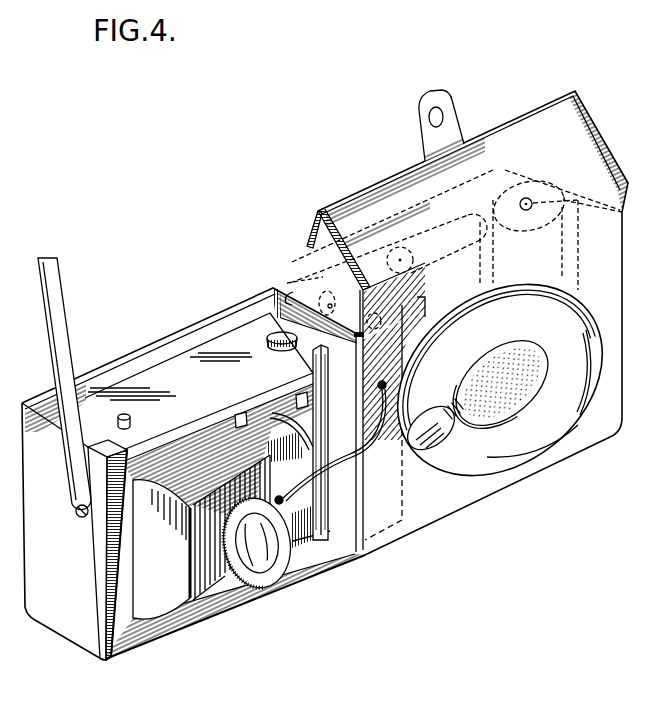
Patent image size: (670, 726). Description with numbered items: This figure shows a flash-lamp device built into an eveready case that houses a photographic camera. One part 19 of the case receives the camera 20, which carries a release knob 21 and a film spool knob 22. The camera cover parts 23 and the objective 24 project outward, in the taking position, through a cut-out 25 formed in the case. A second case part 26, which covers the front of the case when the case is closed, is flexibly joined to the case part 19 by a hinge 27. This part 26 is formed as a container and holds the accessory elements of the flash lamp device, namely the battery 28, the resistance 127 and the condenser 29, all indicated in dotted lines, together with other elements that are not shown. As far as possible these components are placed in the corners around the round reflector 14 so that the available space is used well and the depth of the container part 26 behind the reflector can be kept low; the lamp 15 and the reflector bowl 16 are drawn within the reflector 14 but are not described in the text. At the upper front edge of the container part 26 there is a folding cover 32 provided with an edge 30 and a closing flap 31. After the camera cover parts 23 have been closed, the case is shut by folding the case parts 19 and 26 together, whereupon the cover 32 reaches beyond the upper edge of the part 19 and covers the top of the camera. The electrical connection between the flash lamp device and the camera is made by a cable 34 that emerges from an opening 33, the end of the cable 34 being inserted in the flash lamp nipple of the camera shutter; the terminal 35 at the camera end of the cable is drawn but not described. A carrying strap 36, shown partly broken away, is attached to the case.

The reflector 14 is at (588, 363).
The flash bulb 15 is at (437, 438).
The reflector bowl 16 is at (492, 410).
The case part 19 is at (128, 640).
The camera 20 is at (213, 348).
The release knob 21 is at (131, 416).
The film spool knob 22 is at (275, 352).
The camera cover parts 23 is at (173, 608).
The objective 24 is at (261, 578).
The cut-out 25 is at (137, 559).
The container part 26 is at (297, 281).
The hinge 27 is at (352, 552).
The battery 28 is at (383, 532).
The condenser 29 is at (541, 191).
The edge 30 is at (598, 148).
The closing flap 31 is at (453, 128).
The folding cover 32 is at (528, 143).
The opening 33 is at (387, 385).
The cable 34 is at (381, 438).
The terminal 35 is at (283, 501).
The carrying strap 36 is at (53, 341).
The resistance 127 is at (428, 264).